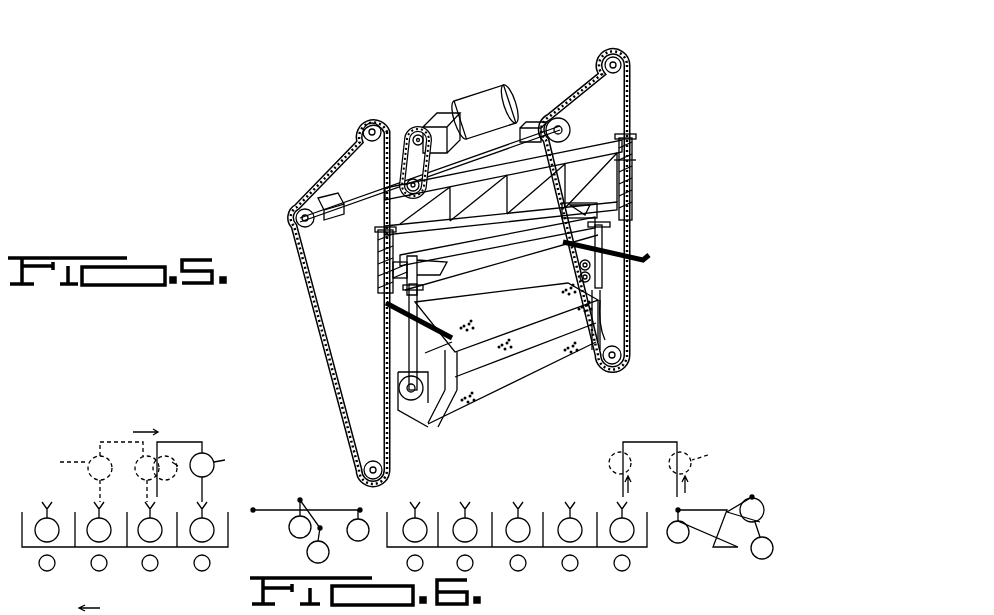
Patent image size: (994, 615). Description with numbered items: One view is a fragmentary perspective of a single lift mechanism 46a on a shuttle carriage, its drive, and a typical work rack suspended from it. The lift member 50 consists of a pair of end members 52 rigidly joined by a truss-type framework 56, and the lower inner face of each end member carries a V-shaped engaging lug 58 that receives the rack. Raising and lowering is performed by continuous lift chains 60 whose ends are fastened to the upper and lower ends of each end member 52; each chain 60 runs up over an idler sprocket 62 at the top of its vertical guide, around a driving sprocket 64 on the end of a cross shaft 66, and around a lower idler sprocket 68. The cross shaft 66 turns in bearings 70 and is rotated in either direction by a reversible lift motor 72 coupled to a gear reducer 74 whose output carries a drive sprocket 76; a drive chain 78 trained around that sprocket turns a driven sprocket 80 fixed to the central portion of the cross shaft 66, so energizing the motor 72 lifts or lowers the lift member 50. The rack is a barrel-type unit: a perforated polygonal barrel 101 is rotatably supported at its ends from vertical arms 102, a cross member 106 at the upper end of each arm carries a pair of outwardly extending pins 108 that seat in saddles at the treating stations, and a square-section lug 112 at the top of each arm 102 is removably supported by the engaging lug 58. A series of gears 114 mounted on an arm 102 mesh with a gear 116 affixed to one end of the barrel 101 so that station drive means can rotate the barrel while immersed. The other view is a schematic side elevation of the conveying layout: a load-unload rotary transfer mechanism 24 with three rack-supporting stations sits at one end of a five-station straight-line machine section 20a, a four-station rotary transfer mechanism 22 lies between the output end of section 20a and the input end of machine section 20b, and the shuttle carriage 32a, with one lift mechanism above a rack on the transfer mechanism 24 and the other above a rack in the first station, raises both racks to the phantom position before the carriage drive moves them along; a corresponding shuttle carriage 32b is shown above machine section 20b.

In FIG. 6, the straight-line conveying machine section 20a is at (545, 552).
In FIG. 6, the machine section 20b is at (174, 552).
In FIG. 6, the four-station rotary transfer mechanism 22 is at (308, 510).
In FIG. 6, the load-unload rotary transfer mechanism 24 is at (732, 548).
In FIG. 6, the shuttle carriage 32a is at (660, 438).
In FIG. 6, the relay 32b is at (118, 440).
In FIG. 5, the lift mechanism 46a is at (634, 167).
In FIG. 5, the lift member 50 is at (530, 172).
In FIG. 5, the end members 52 is at (405, 260).
In FIG. 5, the truss-type framework 56 is at (400, 254).
In FIG. 5, the engaging lug 58 is at (395, 288).
In FIG. 5, the lift chains 60 is at (345, 355).
In FIG. 5, the idler sprocket 62 is at (362, 128).
In FIG. 5, the driving sprocket 64 is at (297, 221).
In FIG. 5, the cross shaft 66 is at (358, 198).
In FIG. 5, the idler sprocket 68 is at (360, 468).
In FIG. 5, the bearings 70 is at (318, 206).
In FIG. 5, the reversible lift motor 72 is at (492, 92).
In FIG. 5, the gear reducer 74 is at (433, 113).
In FIG. 5, the drive sprocket 76 is at (413, 133).
In FIG. 5, the drive chain 78 is at (428, 170).
In FIG. 5, the driven sprocket 80 is at (428, 188).
In FIG. 5, the perforated barrel 101 is at (525, 378).
In FIG. 5, the vertical arms 102 is at (398, 386).
In FIG. 5, the cross member 106 is at (440, 334).
In FIG. 5, the outwardly extending pins 108 is at (390, 312).
In FIG. 5, the outwardly extending lug 112 is at (395, 298).
In FIG. 5, the gears 114 is at (572, 268).
In FIG. 5, the gear 116 is at (618, 323).